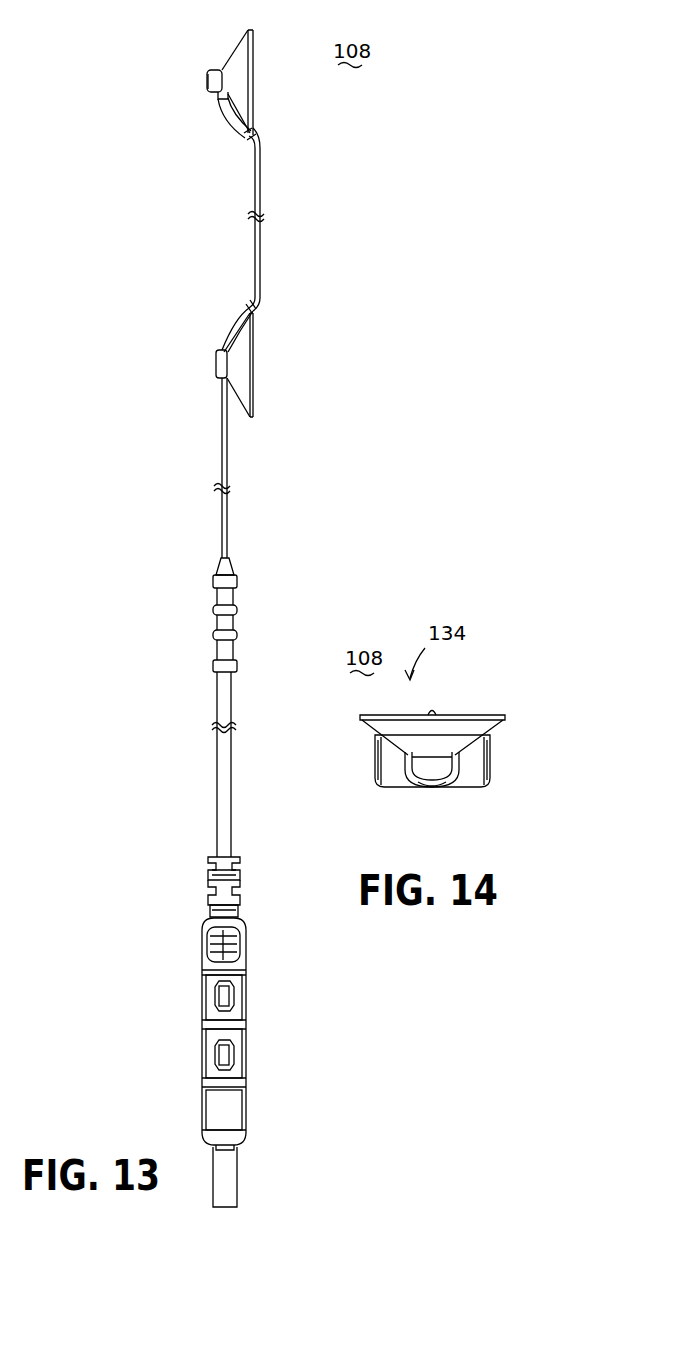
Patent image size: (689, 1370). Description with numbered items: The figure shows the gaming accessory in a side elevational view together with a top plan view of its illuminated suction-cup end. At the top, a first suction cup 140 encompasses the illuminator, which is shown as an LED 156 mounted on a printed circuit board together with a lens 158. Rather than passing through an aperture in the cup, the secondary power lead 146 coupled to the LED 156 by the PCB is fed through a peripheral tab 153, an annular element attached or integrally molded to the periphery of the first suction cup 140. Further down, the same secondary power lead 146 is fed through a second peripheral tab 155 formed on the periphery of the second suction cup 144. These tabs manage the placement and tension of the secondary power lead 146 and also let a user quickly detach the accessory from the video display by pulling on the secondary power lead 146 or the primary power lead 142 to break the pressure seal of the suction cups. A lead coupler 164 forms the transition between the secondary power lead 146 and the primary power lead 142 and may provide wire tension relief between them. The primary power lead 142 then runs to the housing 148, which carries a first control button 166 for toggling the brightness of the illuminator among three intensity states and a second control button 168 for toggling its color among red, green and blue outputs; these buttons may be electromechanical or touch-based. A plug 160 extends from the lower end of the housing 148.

In FIG. 13, the first suction cup 140 is at (250, 72).
In FIG. 14, the first suction cup 140 is at (455, 727).
In FIG. 13, the primary power lead 142 is at (225, 770).
In FIG. 13, the second suction cup 144 is at (250, 360).
In FIG. 13, the secondary power lead 146 is at (255, 193).
In FIG. 13, the housing 148 is at (215, 928).
In FIG. 14, the housing 148 is at (470, 765).
In FIG. 13, the peripheral tab 153 is at (250, 142).
In FIG. 13, the second peripheral tab 155 is at (248, 301).
In FIG. 13, the LED 156 is at (218, 73).
In FIG. 14, the LED 156 is at (420, 768).
In FIG. 13, the lens 158 is at (207, 80).
In FIG. 14, the lens 158 is at (430, 785).
In FIG. 13, the plug 160 is at (222, 1167).
In FIG. 13, the lead coupler 164 is at (215, 600).
In FIG. 13, the first control button 166 is at (230, 990).
In FIG. 13, the second control button 168 is at (230, 1050).